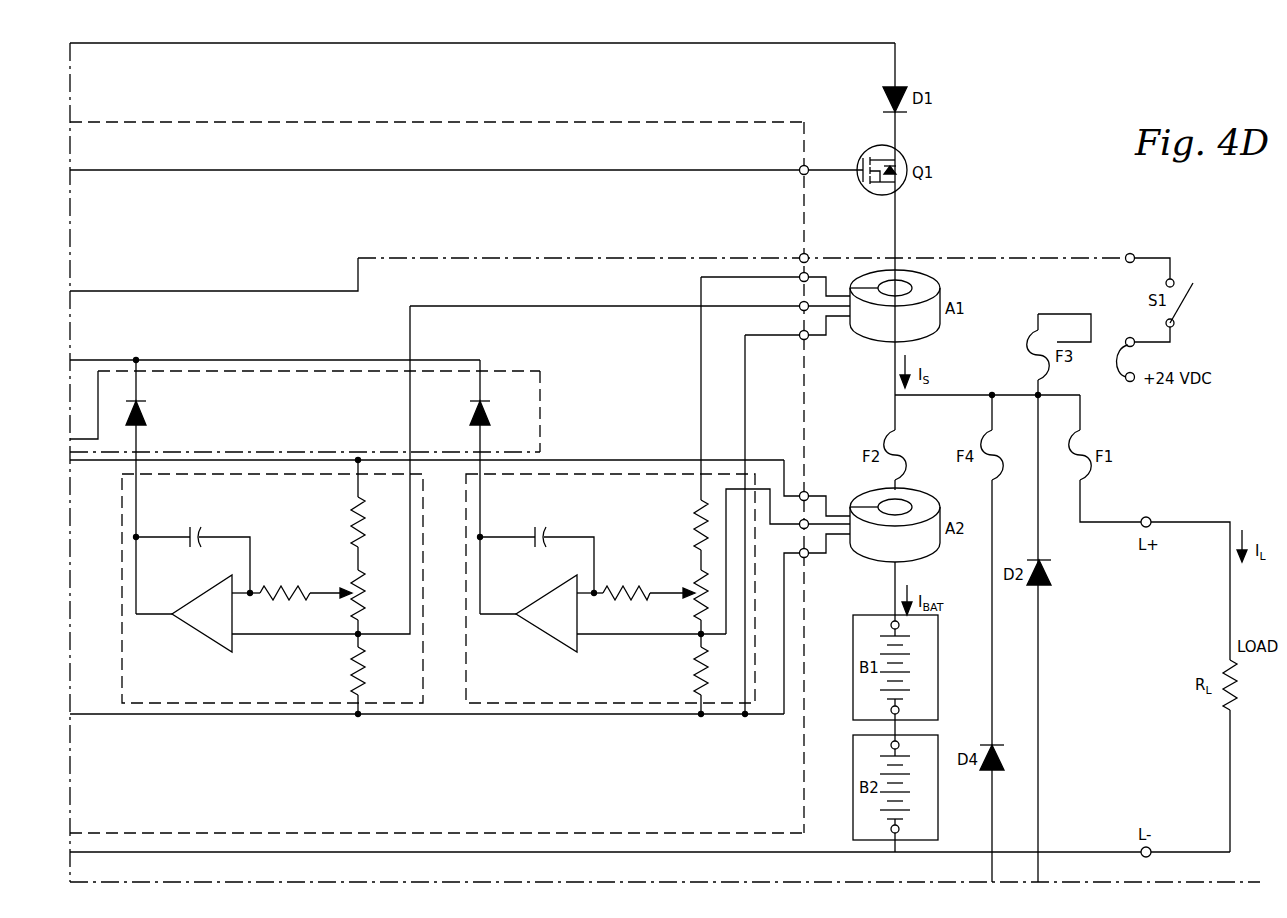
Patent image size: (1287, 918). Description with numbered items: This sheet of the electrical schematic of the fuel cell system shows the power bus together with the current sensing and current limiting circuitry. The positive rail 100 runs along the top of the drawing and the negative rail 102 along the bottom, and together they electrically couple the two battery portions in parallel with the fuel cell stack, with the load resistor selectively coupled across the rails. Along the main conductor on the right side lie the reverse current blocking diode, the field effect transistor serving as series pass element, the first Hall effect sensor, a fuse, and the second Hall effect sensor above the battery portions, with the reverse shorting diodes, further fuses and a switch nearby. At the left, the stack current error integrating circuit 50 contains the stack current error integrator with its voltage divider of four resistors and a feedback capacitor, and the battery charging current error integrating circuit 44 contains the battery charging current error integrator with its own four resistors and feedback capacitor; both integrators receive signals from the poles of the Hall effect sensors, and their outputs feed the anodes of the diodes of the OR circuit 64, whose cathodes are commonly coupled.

The positive rail 100 is at (716, 43).
The negative rail 102 is at (648, 852).
The OR circuit 64 is at (540, 385).
The stack current error integrating circuit 50 is at (210, 703).
The battery charging current error integrating circuit 44 is at (550, 703).